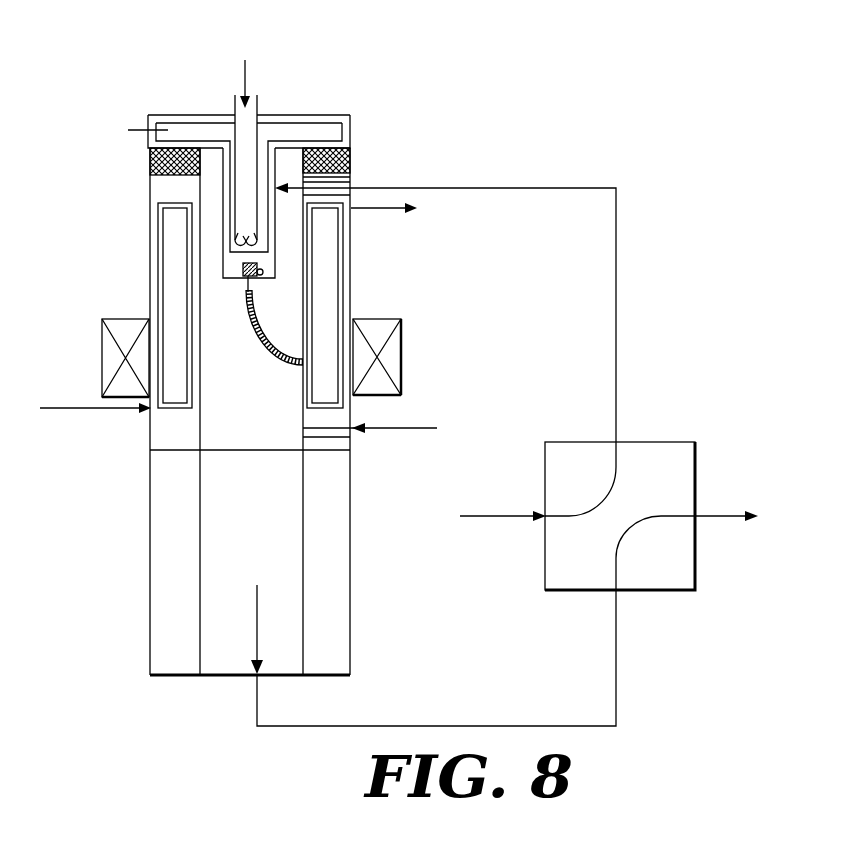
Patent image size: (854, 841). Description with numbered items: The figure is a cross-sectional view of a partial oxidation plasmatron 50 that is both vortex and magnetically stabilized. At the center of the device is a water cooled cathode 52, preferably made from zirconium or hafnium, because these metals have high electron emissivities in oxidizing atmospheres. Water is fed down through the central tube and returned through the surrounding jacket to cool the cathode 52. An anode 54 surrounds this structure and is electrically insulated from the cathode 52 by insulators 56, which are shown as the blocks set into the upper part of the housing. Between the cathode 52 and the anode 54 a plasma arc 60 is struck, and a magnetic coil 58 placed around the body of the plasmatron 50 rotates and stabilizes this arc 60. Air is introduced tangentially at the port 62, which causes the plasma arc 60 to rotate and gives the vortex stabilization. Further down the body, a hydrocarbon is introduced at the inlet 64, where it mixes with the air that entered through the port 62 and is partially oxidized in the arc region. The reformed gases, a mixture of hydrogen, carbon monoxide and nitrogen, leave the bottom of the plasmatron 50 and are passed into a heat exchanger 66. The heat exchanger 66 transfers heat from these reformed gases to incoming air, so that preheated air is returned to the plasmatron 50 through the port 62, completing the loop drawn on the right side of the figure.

The partial oxidation plasmatron 50 is at (290, 99).
The water cooled cathode 52 is at (260, 278).
The anode 54 is at (345, 305).
The insulators 56 is at (148, 158).
The magnetic coil 58 is at (392, 357).
The arc 60 is at (255, 348).
The port 62 is at (352, 176).
The hydrocarbon inlet 64 is at (352, 437).
The heat exchanger 66 is at (657, 442).